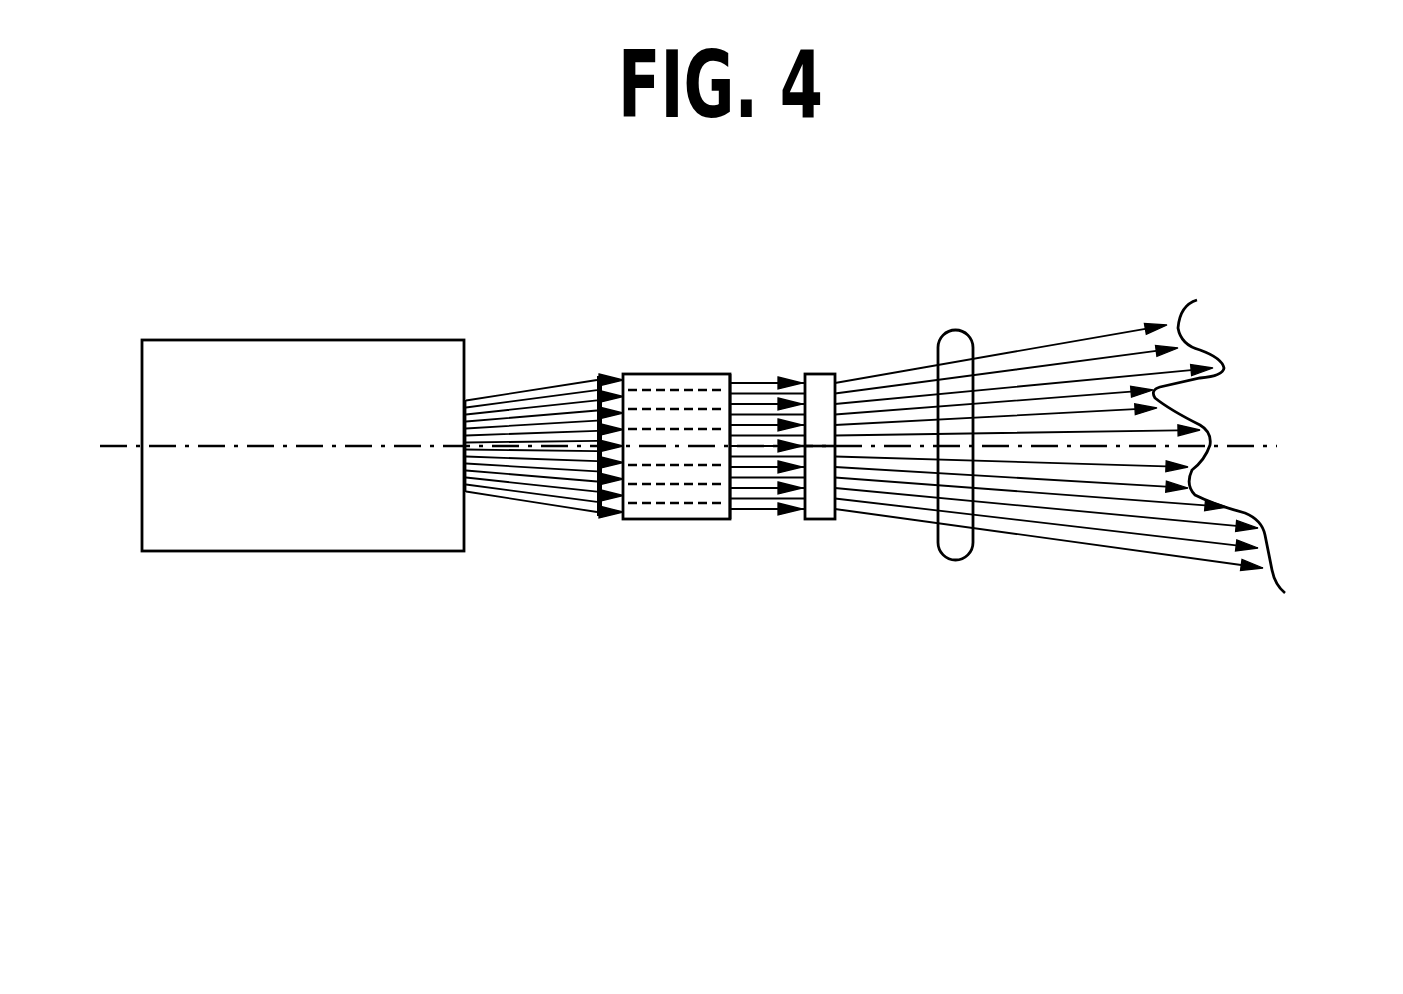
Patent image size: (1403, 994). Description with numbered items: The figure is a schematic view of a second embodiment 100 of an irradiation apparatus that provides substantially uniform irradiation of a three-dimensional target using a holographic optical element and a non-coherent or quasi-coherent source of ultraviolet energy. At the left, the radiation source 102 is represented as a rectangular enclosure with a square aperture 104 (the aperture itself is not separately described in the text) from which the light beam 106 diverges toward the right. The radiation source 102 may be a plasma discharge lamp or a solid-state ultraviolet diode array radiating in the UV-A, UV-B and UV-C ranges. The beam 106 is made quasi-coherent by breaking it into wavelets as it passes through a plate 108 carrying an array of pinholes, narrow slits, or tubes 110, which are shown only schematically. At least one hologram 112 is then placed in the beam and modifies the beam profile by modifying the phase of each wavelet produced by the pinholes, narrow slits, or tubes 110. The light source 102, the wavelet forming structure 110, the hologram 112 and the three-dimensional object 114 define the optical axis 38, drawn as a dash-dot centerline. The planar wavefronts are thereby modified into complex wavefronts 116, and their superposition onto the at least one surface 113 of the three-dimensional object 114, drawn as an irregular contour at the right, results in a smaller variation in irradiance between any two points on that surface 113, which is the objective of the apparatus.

The optical axis 38 is at (1280, 453).
The second embodiment of irradiation apparatus 100 is at (905, 272).
The radiation source 102 is at (282, 553).
The emission point of light source 104 is at (467, 400).
The light beam 106 is at (530, 500).
The plate 108 is at (673, 520).
The array of pinholes, narrow slits, or tubes 110 is at (733, 378).
The hologram 112 is at (810, 519).
The surface of the 3D object 113 is at (1145, 330).
The 3D object 114 is at (1207, 352).
The complex wavefronts 116 is at (953, 560).